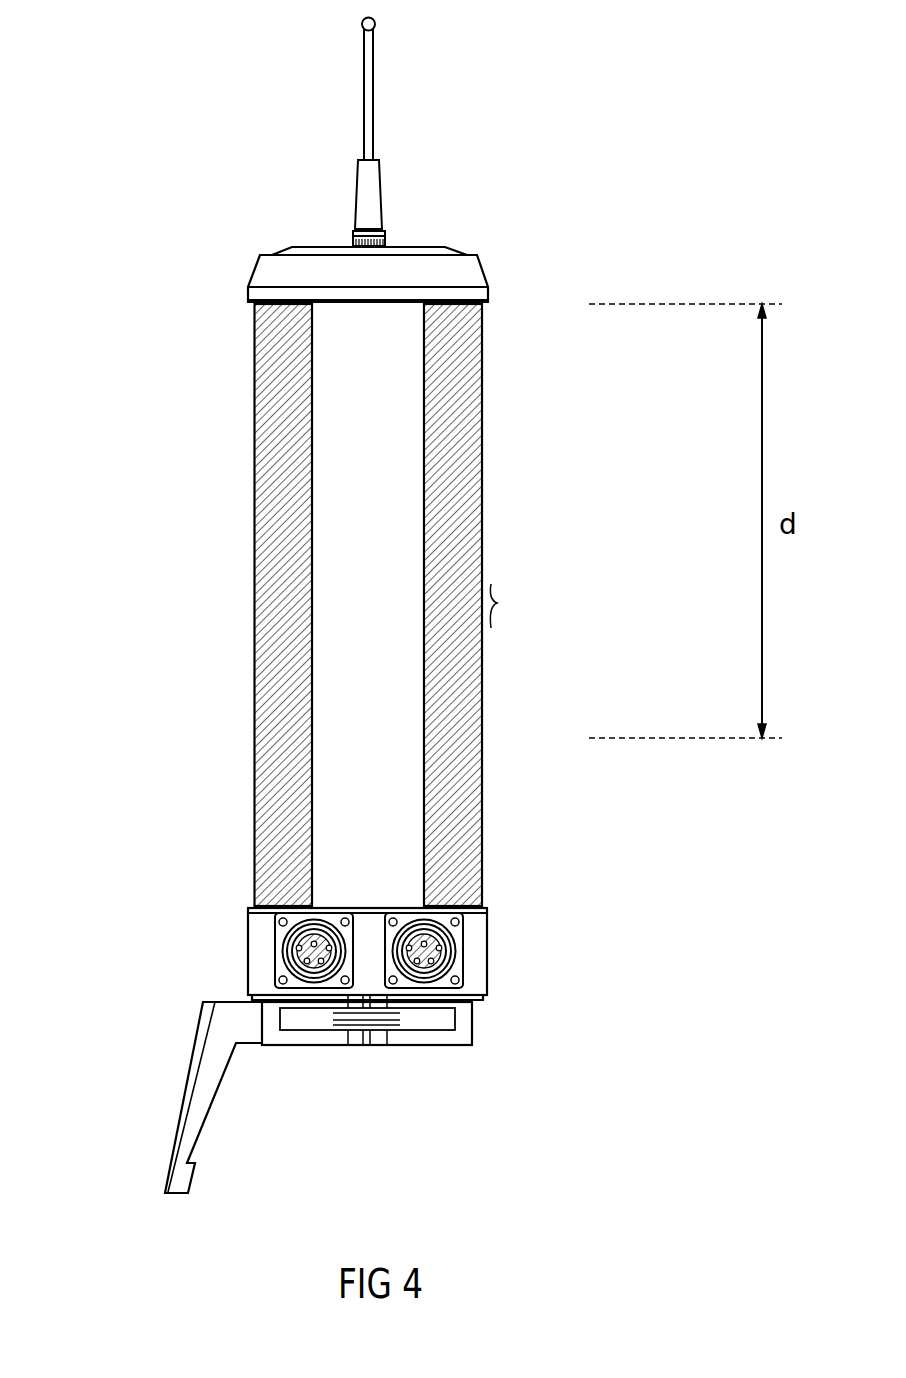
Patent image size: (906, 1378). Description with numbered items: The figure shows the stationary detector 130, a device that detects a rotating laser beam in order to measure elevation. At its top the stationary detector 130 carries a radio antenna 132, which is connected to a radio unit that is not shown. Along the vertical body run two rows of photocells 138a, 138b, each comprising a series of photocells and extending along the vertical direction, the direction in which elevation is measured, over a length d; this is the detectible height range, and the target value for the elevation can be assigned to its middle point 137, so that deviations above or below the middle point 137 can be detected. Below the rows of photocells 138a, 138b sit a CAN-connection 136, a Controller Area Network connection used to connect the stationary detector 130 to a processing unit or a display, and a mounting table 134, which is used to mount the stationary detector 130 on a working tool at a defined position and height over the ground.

The stationary detector 130 is at (108, 197).
The radio antenna 132 is at (375, 128).
The mounting table 134 is at (357, 1088).
The CAN-connection 136 is at (292, 951).
The middle point 137 is at (498, 603).
The row of photocells 138a is at (470, 827).
The row of photocells 138b is at (258, 795).